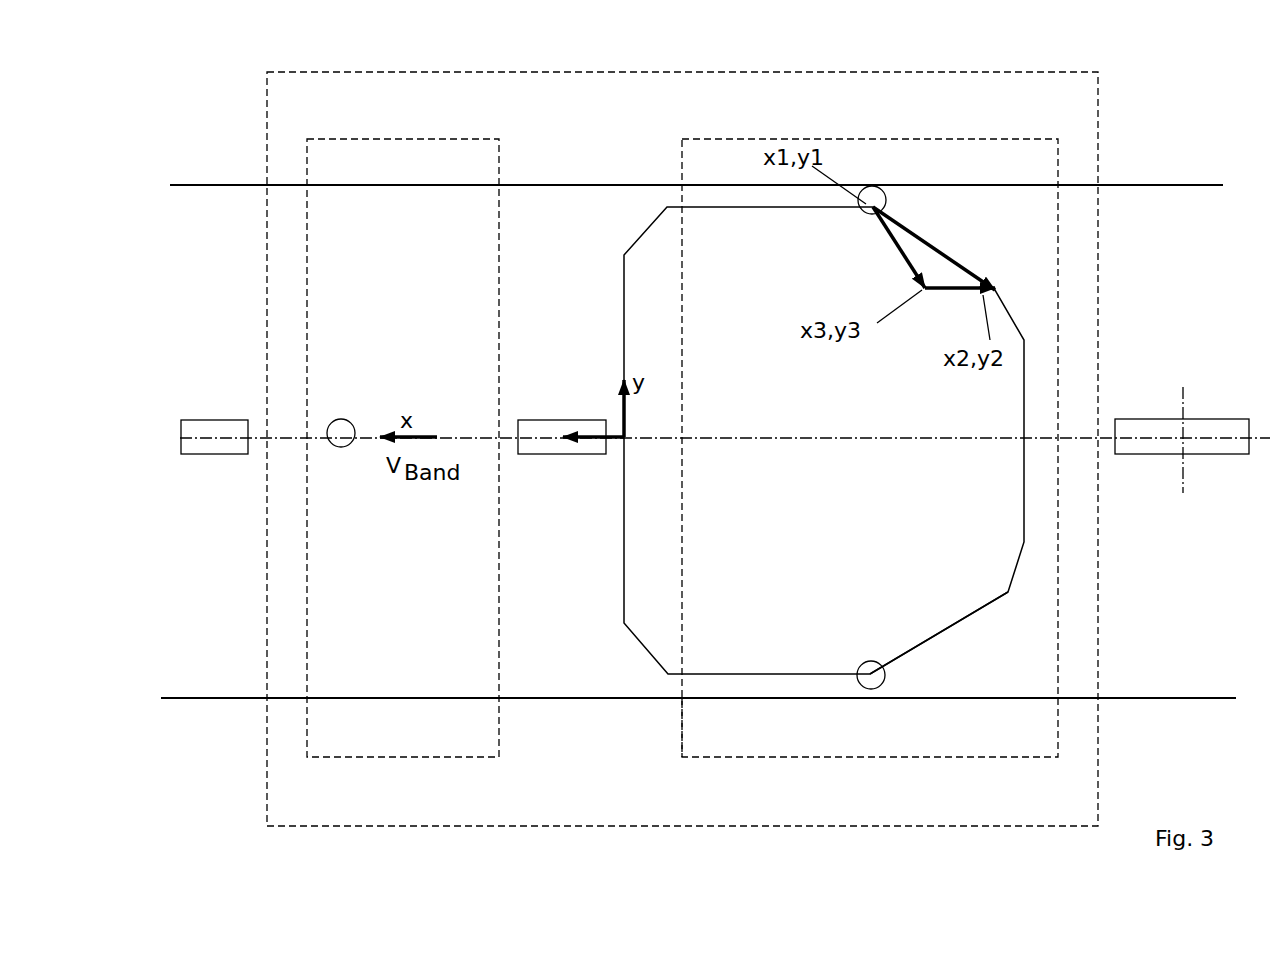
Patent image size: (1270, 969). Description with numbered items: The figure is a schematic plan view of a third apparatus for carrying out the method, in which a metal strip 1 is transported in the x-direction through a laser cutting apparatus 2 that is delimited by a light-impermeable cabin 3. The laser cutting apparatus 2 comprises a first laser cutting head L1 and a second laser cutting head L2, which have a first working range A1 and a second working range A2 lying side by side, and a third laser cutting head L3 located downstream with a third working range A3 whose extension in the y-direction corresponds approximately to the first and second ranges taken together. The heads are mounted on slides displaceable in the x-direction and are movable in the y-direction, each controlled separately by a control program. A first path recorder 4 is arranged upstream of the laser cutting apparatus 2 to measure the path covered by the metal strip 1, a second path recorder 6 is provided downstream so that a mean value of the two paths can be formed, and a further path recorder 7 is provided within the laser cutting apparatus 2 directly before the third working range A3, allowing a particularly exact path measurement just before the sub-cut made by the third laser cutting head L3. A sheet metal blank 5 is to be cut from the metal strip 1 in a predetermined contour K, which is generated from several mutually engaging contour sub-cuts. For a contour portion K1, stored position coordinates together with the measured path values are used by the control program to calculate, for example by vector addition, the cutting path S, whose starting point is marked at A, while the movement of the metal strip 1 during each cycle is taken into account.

The metal strip 1 is at (1147, 187).
The laser cutting apparatus 2 is at (1130, 732).
The cabin 3 is at (1100, 110).
The first path recorder 4 is at (1167, 455).
The sheet metal blank 5 is at (824, 440).
The second path recorder 6 is at (212, 447).
The further path recorder 7 is at (537, 432).
The starting point A is at (885, 187).
The first working range A1 is at (682, 157).
The second working range A2 is at (682, 720).
The third working range A3 is at (500, 583).
The contour K is at (975, 617).
The contour portion K1 is at (975, 270).
The first laser cutting head L1 is at (886, 198).
The second laser cutting head L2 is at (873, 680).
The third laser cutting head L3 is at (344, 430).
The cutting path S is at (888, 235).